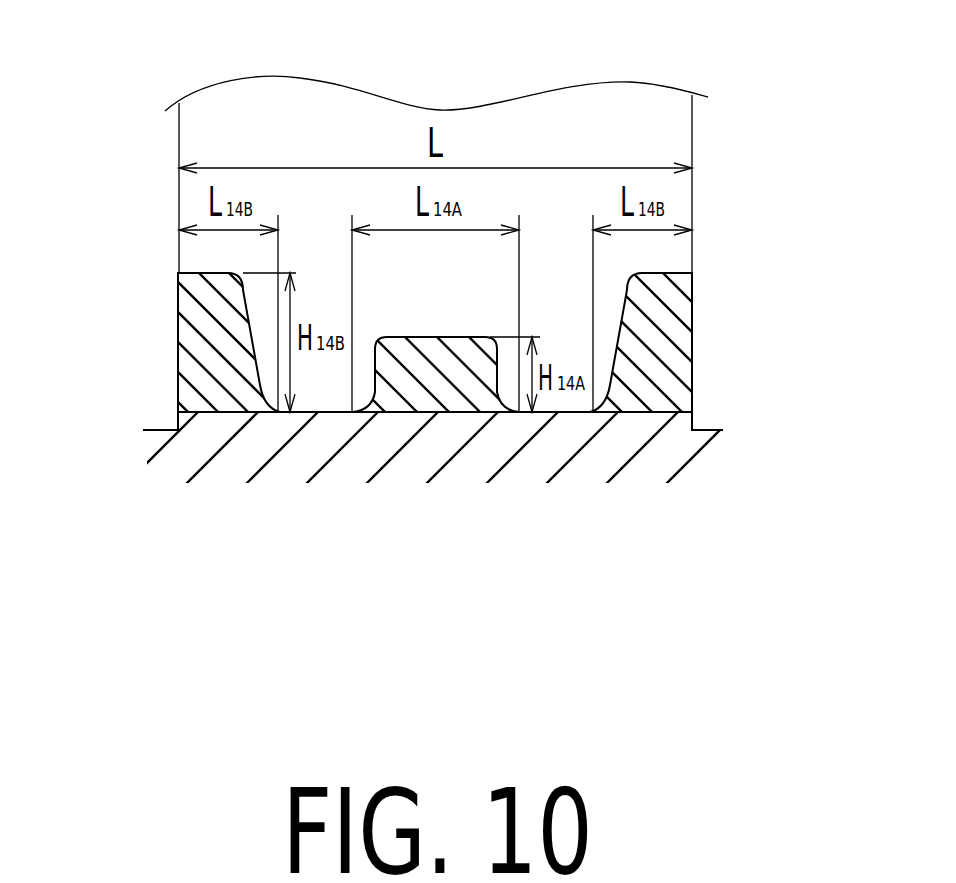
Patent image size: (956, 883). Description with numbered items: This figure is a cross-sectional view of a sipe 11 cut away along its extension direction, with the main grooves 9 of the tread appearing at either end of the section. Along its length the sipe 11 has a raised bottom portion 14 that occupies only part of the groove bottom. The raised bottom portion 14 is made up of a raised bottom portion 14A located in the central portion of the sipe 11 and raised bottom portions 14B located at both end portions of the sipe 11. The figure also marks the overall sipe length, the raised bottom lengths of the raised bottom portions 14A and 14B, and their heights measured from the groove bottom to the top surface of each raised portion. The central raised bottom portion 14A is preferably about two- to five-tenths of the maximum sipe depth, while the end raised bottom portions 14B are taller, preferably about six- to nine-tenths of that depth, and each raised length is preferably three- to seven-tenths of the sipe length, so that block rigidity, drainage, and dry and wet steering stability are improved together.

The main groove 9 is at (162, 420).
The sipe 11 is at (562, 313).
The raised bottom portion 14 is at (418, 445).
The raised bottom portion located in the central portion of the sipe 14A is at (387, 412).
The raised bottom portions located at both end portions of the sipe 14B is at (230, 377).